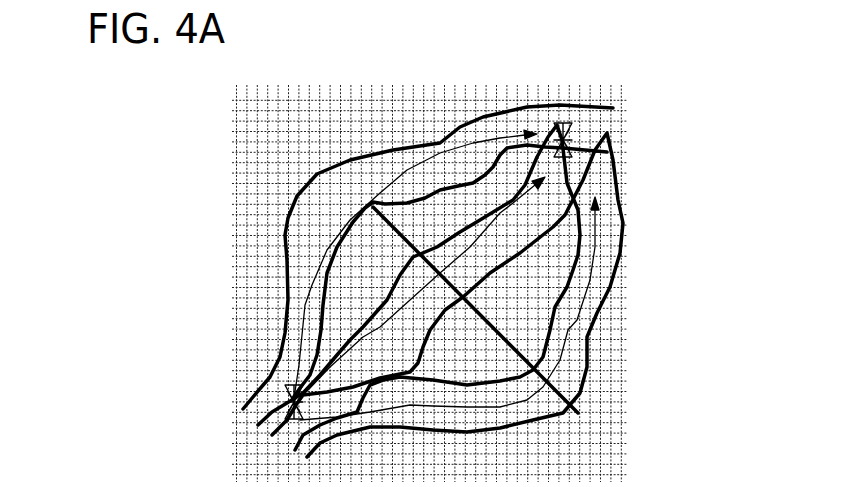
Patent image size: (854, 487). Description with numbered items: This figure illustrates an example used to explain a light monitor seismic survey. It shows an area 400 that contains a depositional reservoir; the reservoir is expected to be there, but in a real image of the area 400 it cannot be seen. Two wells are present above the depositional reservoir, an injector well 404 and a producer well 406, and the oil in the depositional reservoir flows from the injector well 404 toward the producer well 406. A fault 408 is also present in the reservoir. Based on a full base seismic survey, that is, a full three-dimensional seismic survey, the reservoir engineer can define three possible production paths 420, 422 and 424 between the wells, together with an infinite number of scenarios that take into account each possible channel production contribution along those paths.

The area 400 is at (193, 127).
The injector well 404 is at (285, 413).
The producer well 406 is at (570, 145).
The fault 408 is at (543, 385).
The production path 420 is at (415, 264).
The production path 422 is at (421, 288).
The production path 424 is at (449, 308).